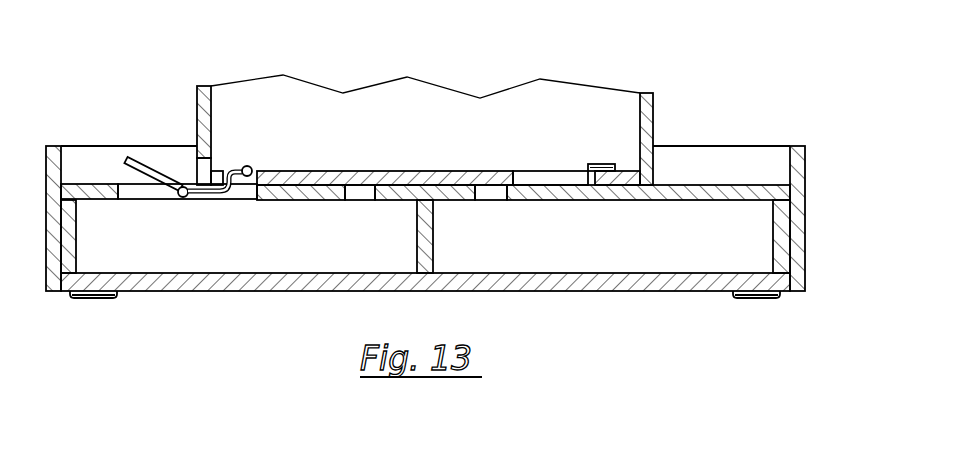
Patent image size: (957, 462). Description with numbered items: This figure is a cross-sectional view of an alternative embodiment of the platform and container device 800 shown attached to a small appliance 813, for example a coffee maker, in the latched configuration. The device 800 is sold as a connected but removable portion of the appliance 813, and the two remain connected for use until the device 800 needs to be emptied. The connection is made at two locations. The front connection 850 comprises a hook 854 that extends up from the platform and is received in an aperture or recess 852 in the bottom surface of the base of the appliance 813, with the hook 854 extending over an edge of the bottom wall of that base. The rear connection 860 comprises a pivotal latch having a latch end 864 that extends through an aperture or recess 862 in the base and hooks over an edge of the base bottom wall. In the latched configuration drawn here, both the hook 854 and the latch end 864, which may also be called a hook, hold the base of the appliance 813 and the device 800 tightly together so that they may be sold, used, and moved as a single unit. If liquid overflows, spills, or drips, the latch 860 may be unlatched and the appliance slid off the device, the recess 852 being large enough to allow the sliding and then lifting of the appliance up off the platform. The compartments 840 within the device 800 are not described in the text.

The device 800 is at (135, 300).
The small appliance 813 is at (188, 133).
The chamber 840 is at (272, 212).
The front connection 850 is at (582, 101).
The aperture or recess 852 is at (547, 177).
The hook 854 is at (604, 164).
The rear connection 860 is at (178, 173).
The aperture/recess 862 is at (205, 167).
The latch end 864 is at (233, 166).